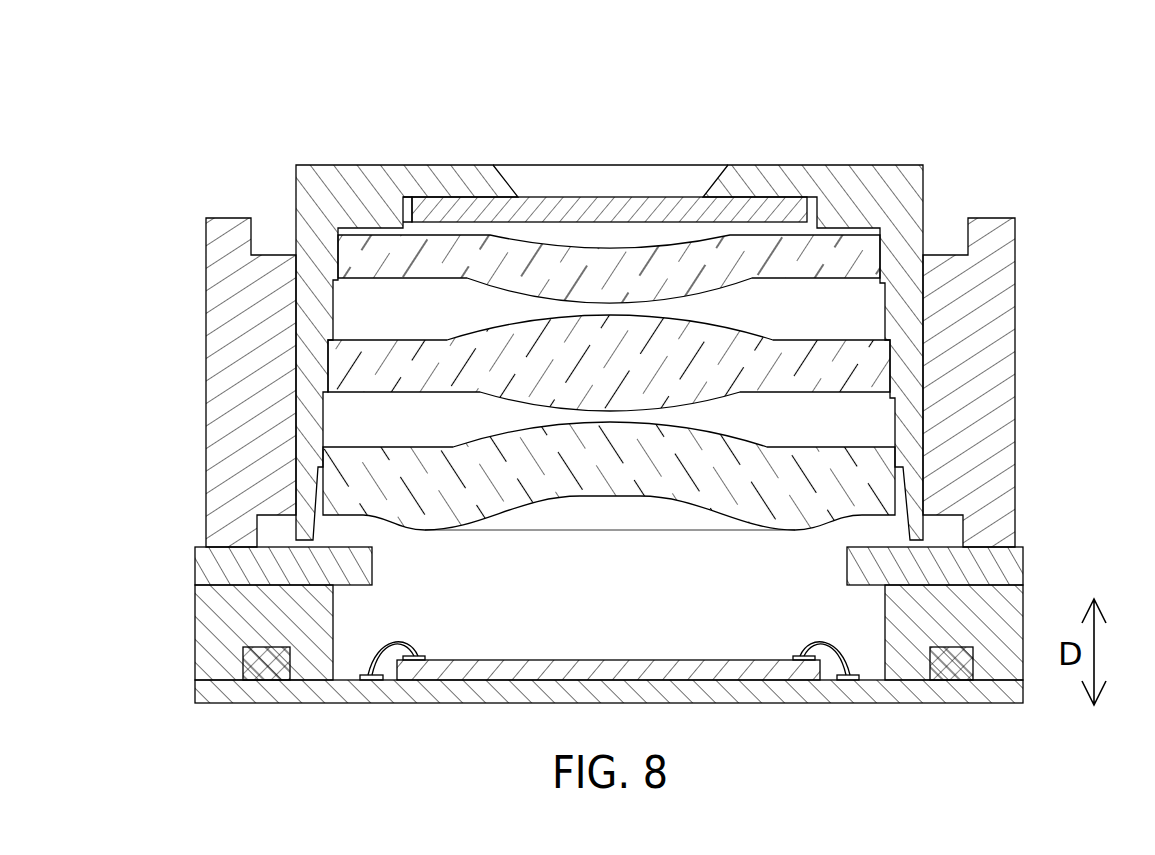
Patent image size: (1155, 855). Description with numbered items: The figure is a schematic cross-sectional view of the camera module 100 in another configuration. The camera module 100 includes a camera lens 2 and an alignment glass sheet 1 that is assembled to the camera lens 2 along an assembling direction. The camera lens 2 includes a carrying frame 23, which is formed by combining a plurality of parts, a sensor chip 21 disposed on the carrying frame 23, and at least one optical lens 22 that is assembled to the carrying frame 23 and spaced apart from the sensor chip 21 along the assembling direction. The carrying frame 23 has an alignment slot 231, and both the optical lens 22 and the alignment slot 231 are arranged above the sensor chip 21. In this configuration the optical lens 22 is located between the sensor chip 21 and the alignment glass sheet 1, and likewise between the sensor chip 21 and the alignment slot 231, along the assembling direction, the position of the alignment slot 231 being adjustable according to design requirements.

The camera module 100 is at (591, 368).
The alignment glass sheet 1 is at (570, 194).
The camera lens 2 is at (591, 368).
The sensor chip 21 is at (369, 336).
The optical lens 22 is at (549, 657).
The carrying frame 23 is at (578, 434).
The alignment slot 231 is at (402, 210).